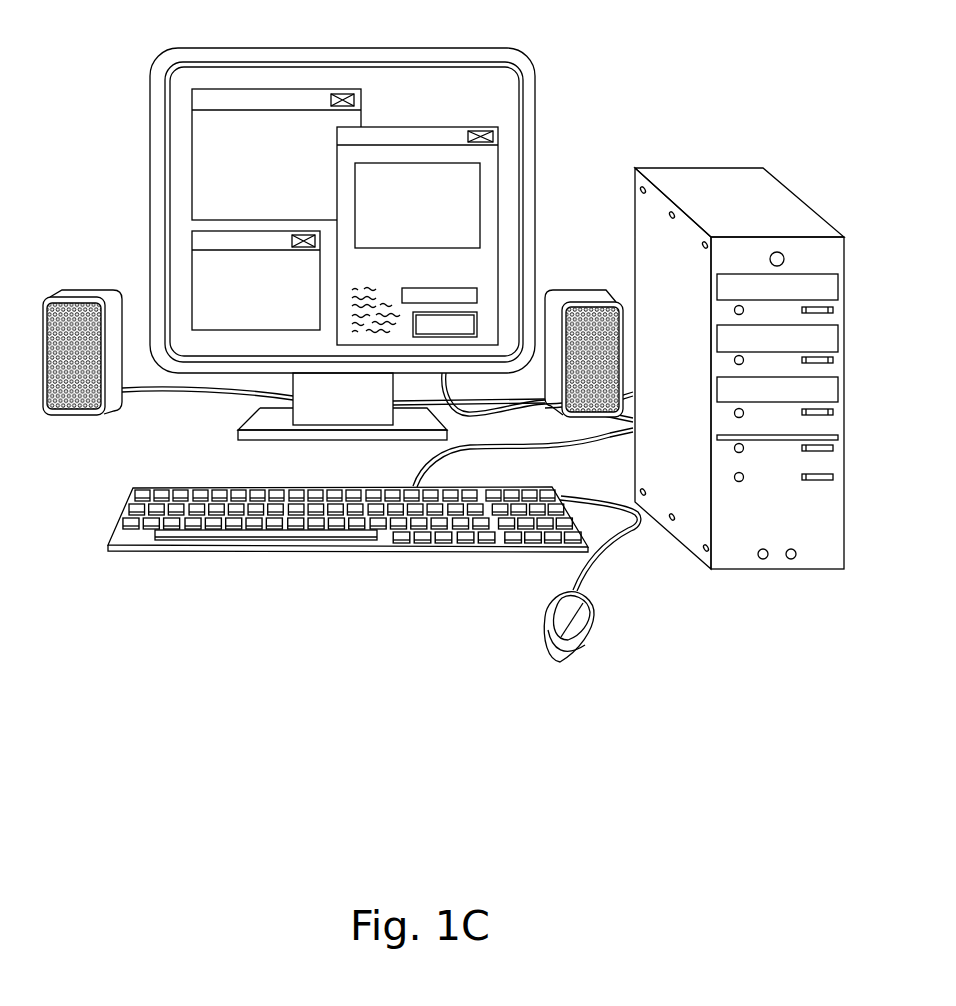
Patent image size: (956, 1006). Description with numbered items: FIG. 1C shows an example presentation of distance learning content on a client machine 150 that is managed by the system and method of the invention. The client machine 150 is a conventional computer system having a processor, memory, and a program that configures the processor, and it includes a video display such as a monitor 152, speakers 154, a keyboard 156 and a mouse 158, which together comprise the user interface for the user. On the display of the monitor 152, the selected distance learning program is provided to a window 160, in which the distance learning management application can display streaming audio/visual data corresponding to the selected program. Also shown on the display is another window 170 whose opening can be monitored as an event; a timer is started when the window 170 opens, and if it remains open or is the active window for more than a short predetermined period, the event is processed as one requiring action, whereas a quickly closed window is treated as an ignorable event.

The client machine 150 is at (795, 517).
The monitor 152 is at (150, 110).
The speakers 154 is at (75, 290).
The keyboard 156 is at (293, 551).
The mouse 158 is at (588, 644).
The window 160 is at (444, 118).
The window 170 is at (186, 261).